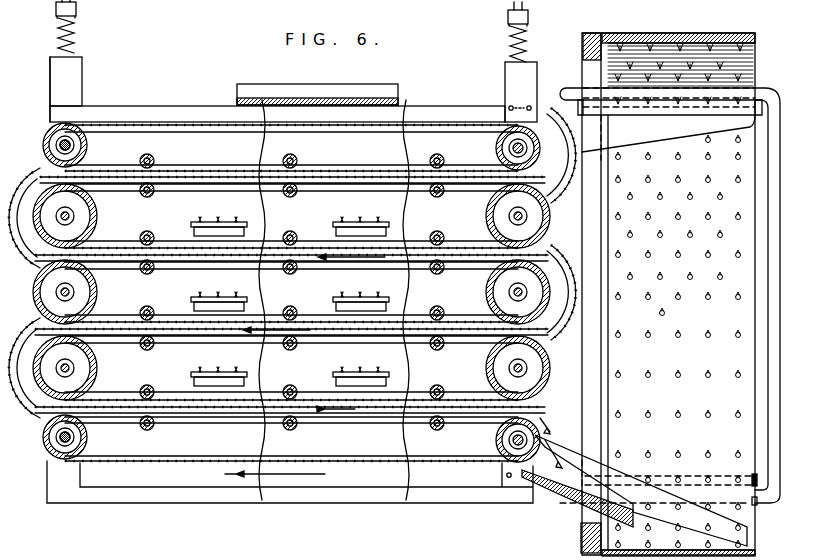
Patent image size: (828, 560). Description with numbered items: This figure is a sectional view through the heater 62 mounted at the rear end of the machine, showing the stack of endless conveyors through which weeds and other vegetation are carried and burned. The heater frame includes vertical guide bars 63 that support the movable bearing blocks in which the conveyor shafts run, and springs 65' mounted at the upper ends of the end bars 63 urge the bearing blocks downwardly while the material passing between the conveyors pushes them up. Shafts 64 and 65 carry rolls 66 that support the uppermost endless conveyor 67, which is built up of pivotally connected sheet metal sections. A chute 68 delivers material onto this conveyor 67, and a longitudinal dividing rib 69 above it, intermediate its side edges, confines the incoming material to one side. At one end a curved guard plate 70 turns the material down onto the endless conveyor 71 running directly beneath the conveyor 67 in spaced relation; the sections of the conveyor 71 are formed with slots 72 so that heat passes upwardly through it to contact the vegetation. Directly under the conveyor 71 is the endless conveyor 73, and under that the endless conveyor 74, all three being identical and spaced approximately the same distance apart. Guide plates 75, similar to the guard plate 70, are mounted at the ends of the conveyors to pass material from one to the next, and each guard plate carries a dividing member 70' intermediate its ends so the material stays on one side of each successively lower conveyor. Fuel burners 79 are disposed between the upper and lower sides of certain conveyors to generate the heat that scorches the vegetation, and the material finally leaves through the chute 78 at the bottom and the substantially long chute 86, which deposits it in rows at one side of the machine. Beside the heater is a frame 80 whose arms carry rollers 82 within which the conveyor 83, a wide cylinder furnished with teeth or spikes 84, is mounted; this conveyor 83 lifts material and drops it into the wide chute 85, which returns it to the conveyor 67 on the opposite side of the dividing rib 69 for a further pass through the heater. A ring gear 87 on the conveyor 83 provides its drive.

The heater 62 is at (203, 495).
The vertical guide bar 63 is at (78, 74).
The shaft 64 is at (70, 140).
The shaft 65 is at (493, 262).
The spring 65' is at (292, 31).
The roll 66 is at (89, 146).
The endless conveyor 67 is at (406, 122).
The chute 68 is at (289, 86).
The dividing rib 69 is at (200, 104).
The curved guard plate 70 is at (664, 277).
The dividing member 70' is at (292, 297).
The endless conveyor 71 is at (463, 186).
The slot 72 is at (319, 183).
The endless conveyor 73 is at (469, 264).
The endless conveyor 74 is at (450, 340).
The guide plate 75 is at (28, 170).
The chute 78 is at (589, 495).
The fuel burner 79 is at (201, 221).
The frame 80 is at (772, 303).
The roller 82 is at (772, 501).
The conveyor 83 is at (759, 478).
The teeth or spikes 84 is at (741, 377).
The chute 85 is at (668, 133).
The chute 86 is at (749, 532).
The ring gear 87 is at (585, 36).